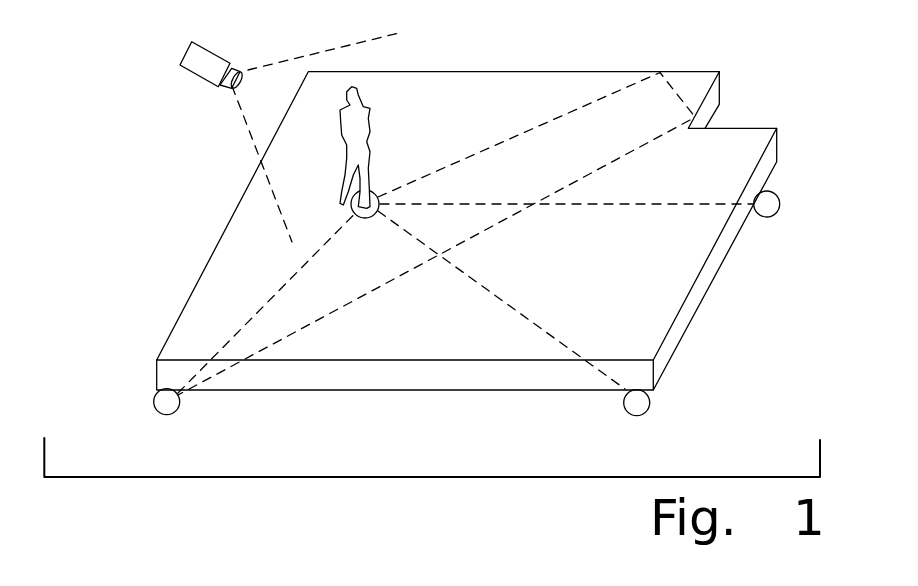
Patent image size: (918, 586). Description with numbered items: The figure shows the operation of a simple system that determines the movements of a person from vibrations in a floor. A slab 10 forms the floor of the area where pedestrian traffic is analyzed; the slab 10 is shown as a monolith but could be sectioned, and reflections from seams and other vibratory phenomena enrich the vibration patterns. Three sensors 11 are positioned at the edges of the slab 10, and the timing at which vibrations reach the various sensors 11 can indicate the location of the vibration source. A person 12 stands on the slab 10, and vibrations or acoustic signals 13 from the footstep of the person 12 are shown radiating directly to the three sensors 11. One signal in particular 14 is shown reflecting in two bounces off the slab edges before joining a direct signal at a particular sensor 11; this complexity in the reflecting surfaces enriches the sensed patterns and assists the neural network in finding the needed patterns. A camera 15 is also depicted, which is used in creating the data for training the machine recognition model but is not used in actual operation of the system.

The slab 10 is at (407, 391).
The sensors 11 is at (178, 408).
The person 12 is at (370, 140).
The vibrations or acoustic signals 13 is at (285, 285).
The reflected signal 14 is at (640, 150).
The camera 15 is at (205, 80).